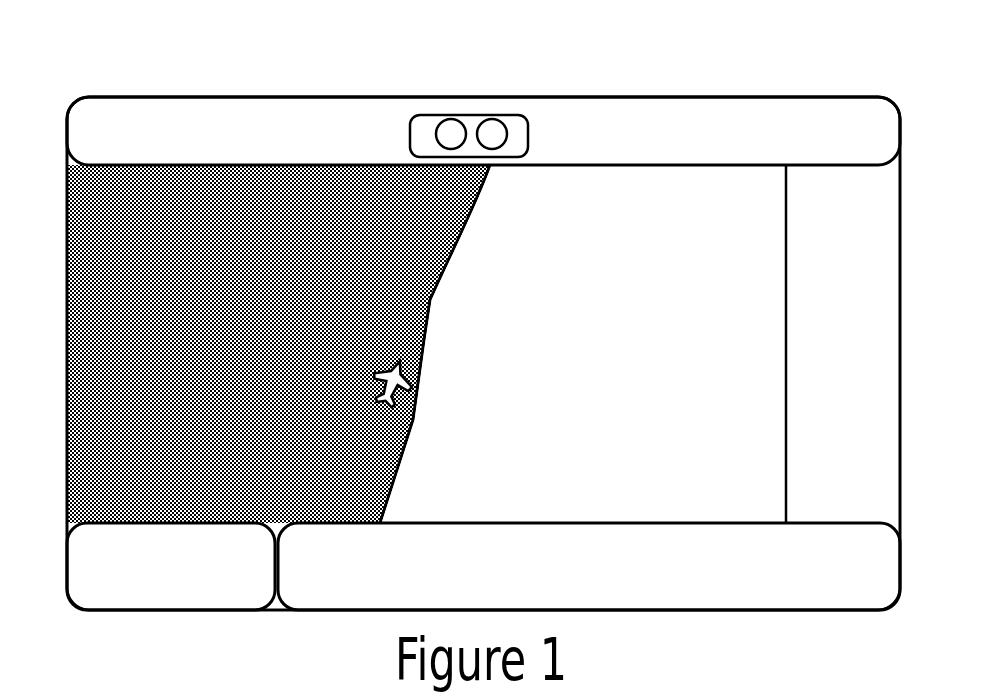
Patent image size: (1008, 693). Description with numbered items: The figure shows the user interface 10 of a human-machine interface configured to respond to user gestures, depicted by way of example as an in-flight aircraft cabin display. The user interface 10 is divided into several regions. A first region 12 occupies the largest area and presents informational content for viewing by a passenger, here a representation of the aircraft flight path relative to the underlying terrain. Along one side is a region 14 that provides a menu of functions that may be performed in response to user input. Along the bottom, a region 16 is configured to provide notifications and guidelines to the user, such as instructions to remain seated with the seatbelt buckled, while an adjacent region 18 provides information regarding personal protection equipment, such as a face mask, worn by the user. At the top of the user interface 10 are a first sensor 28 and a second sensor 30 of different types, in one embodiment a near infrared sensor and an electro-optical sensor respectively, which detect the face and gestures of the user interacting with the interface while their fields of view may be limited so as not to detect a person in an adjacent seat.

The user interface 10 is at (745, 92).
The first region 12 is at (100, 350).
The region 14 is at (860, 357).
The region 16 is at (609, 582).
The region 18 is at (187, 581).
The first sensor 28 is at (451, 133).
The second sensor 30 is at (492, 133).